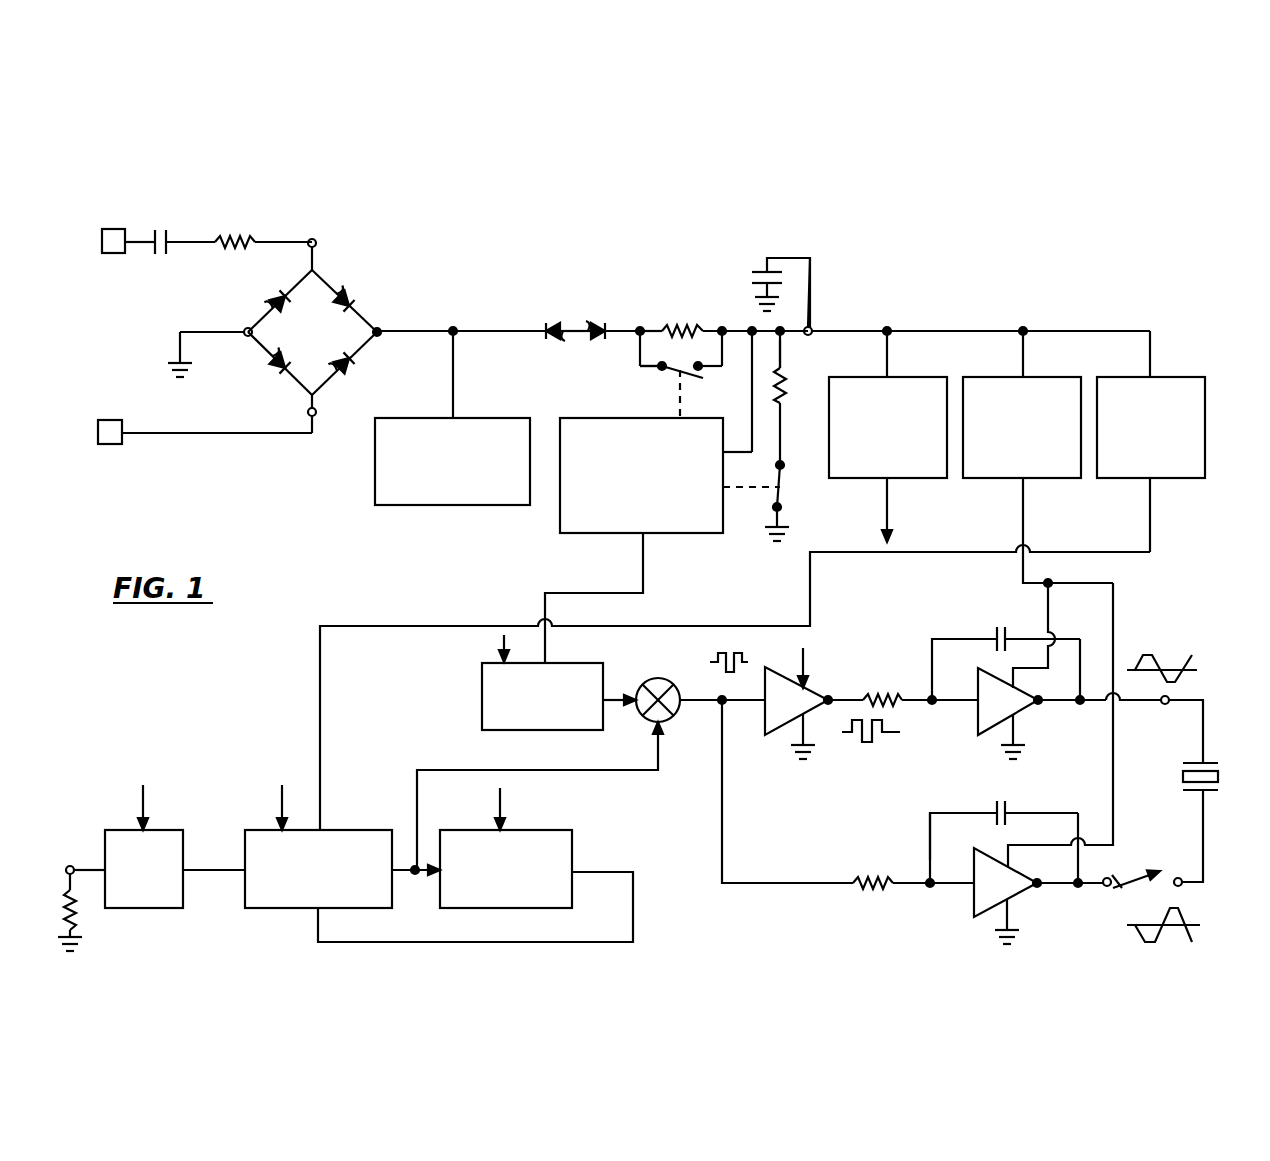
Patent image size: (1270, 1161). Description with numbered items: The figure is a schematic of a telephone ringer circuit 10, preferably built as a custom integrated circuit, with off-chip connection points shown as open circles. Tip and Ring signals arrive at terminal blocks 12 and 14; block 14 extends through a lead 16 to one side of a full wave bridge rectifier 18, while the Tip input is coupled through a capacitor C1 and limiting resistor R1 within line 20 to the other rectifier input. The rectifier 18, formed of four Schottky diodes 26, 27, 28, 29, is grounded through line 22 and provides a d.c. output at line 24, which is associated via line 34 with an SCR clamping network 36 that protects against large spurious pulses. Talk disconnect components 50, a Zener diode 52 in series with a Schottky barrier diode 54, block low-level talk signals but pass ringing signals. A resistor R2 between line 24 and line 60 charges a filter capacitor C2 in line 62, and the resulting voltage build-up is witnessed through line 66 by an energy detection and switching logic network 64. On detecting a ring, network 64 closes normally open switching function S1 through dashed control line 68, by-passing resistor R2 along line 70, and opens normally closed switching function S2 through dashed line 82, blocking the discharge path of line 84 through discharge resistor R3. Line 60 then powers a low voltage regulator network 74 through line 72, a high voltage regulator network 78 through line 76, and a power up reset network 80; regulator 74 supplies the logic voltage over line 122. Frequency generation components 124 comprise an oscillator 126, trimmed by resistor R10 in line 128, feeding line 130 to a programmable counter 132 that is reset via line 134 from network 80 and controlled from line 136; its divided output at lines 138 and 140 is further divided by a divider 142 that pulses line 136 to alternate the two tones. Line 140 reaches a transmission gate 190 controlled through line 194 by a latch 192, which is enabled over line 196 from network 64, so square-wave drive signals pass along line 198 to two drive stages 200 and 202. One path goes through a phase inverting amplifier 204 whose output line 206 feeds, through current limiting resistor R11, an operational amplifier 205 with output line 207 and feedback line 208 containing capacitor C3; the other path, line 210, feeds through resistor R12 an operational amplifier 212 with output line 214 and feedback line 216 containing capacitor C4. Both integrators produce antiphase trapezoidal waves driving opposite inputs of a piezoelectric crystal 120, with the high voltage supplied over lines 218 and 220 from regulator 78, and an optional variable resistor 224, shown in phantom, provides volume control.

The telephone ringer circuit 10 is at (985, 312).
The Tip terminal block 12 is at (120, 229).
The Ring terminal block 14 is at (116, 444).
The lead 16 is at (216, 434).
The full wave bridge rectifier 18 is at (324, 336).
The line 20 is at (182, 244).
The line 22 is at (220, 332).
The line 24 is at (451, 304).
The Schottky diode 26 is at (270, 297).
The Schottky diode 27 is at (348, 297).
The Schottky diode 28 is at (268, 365).
The Schottky diode 29 is at (352, 369).
The line 34 is at (454, 386).
The SCR clamping network 36 is at (374, 466).
The talk disconnect components 50 is at (575, 302).
The Zener diode 52 is at (544, 330).
The Schottky barrier diode 54 is at (606, 328).
The line 60 is at (826, 326).
The line 62 is at (812, 276).
The energy detection and switching logic network 64 is at (563, 533).
The line 66 is at (750, 402).
The dashed control line 68 is at (678, 407).
The by-pass line 70 is at (640, 368).
The line 72 is at (887, 354).
The low voltage regulator network 74 is at (829, 430).
The line 76 is at (1024, 354).
The high voltage regulator network 78 is at (1001, 480).
The power up reset network 80 is at (1120, 480).
The dashed control line 82 is at (742, 488).
The line 84 is at (784, 352).
The piezoelectric crystal 120 is at (1182, 777).
The line 122 is at (882, 514).
The frequency generation components 124 is at (331, 835).
The oscillator 126 is at (110, 826).
The line 128 is at (90, 834).
The line 130 is at (190, 868).
The programmable counter 132 is at (356, 828).
The line 134 is at (320, 696).
The line 136 is at (507, 942).
The line 138 is at (406, 878).
The drive frequency output line 140 is at (502, 765).
The frequency divider 142 is at (572, 848).
The transmission gate 190 is at (659, 676).
The latch 192 is at (482, 691).
The line 194 is at (632, 711).
The line 196 is at (580, 592).
The line 198 is at (685, 723).
The slew rate controlled drive stage 200 is at (1009, 618).
The slew rate controlled drive stage 202 is at (912, 825).
The phase inverting amplifier 204 is at (771, 734).
The operational amplifier 205 is at (974, 724).
The line 206 is at (848, 700).
The line 207 is at (1051, 703).
The feedback line 208 is at (1068, 637).
The line 210 is at (722, 812).
The operational amplifier 212 is at (980, 910).
The line 214 is at (1046, 885).
The feedback line 216 is at (940, 809).
The line 218 is at (1114, 602).
The line 220 is at (1042, 591).
The variable resistor 224 is at (1131, 873).
The capacitor C1 is at (168, 236).
The filter capacitor C2 is at (750, 274).
The capacitor C3 is at (1008, 620).
The capacitor C4 is at (1008, 811).
The limiting resistor R1 is at (242, 238).
The resistor R2 is at (678, 324).
The discharge resistor R3 is at (784, 378).
The resistor R10 is at (64, 889).
The current limiting resistor R11 is at (880, 697).
The current limiting resistor R12 is at (874, 881).
The switching function S1 is at (680, 374).
The switching function S2 is at (826, 498).